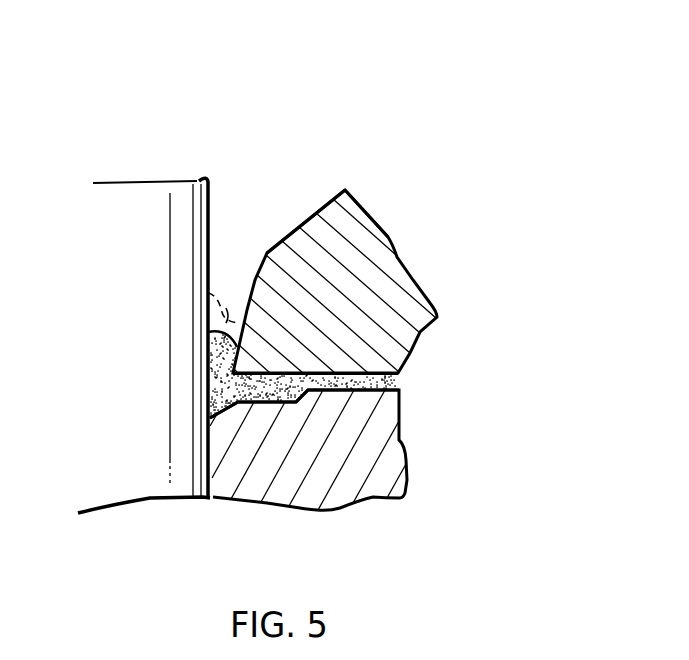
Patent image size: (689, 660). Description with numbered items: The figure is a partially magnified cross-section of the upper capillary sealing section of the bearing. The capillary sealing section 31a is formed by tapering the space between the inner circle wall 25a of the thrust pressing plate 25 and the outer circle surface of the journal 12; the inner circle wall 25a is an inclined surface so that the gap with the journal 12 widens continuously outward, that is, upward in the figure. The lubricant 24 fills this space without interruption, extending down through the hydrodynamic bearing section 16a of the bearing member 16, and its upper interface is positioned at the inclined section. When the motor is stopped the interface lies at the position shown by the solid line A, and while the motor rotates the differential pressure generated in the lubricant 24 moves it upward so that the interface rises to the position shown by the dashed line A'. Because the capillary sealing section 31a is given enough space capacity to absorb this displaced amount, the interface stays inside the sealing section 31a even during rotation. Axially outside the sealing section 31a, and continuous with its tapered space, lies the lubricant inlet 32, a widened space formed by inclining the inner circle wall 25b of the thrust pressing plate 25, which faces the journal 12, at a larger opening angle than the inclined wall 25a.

The journal 12 is at (150, 213).
The lubricant inlet 32 is at (264, 220).
The capillary sealing section 31a is at (253, 281).
The thrust pressing plate 25 is at (377, 272).
The inner circle wall 25a is at (247, 302).
The inner circle wall 25b is at (325, 207).
The frame member 16 is at (382, 443).
The hydrodynamic bearing section 16a is at (340, 380).
The lubricant 24 is at (210, 417).
The interface of the lubricant (motor stopped) A is at (147, 349).
The interface of the lubricant (motor rotating) A' is at (150, 290).